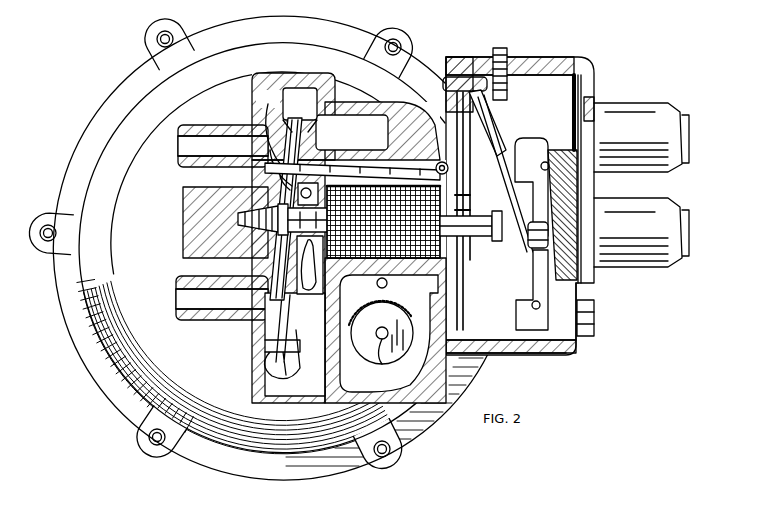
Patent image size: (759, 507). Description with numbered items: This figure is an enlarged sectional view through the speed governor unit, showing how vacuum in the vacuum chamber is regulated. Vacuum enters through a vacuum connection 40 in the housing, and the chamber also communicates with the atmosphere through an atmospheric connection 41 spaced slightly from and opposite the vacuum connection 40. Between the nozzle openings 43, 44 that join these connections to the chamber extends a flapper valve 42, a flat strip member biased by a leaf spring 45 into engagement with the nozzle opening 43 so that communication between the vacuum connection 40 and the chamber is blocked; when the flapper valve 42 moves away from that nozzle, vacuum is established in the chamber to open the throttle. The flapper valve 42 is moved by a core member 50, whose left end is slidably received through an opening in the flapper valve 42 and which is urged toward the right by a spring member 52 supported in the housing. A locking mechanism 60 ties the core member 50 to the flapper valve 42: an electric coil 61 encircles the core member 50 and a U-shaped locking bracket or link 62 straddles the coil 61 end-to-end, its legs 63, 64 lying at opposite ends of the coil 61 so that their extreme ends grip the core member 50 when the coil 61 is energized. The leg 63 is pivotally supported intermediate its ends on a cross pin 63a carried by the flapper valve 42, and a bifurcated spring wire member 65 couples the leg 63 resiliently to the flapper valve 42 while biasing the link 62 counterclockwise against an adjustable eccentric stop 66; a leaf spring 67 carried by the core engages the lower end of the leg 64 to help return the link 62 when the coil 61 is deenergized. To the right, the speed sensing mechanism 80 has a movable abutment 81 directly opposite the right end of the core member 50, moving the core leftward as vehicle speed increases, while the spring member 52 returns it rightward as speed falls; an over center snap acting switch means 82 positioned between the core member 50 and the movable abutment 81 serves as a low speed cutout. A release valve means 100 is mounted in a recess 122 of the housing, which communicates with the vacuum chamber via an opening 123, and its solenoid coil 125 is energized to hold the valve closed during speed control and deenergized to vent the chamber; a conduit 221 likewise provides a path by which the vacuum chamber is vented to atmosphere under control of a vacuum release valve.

The vacuum connection 40 is at (182, 149).
The atmospheric connection 41 is at (344, 147).
The flapper valve 42 is at (305, 86).
The nozzle opening 43 is at (296, 147).
The nozzle opening 44 is at (300, 136).
The leaf spring 45 is at (310, 265).
The core member 50 is at (470, 241).
The spring member 52 is at (246, 219).
The locking mechanism 60 is at (398, 162).
The electric coil 61 is at (382, 229).
The locking bracket or link 62 is at (364, 156).
The leg 63 is at (262, 206).
The cross pin 63a is at (298, 188).
The leg 64 is at (466, 200).
The spring wire member 65 is at (290, 171).
The adjustable eccentric stop 66 is at (442, 162).
The leaf spring 67 is at (466, 213).
The speed sensing mechanism 80 is at (555, 108).
The movable abutment 81 is at (538, 222).
The over center snap acting switch means 82 is at (496, 127).
The release valve means 100 is at (415, 353).
The recess 122 is at (413, 379).
The opening 123 is at (378, 362).
The solenoid coil 125 is at (393, 323).
The conduit 221 is at (179, 297).